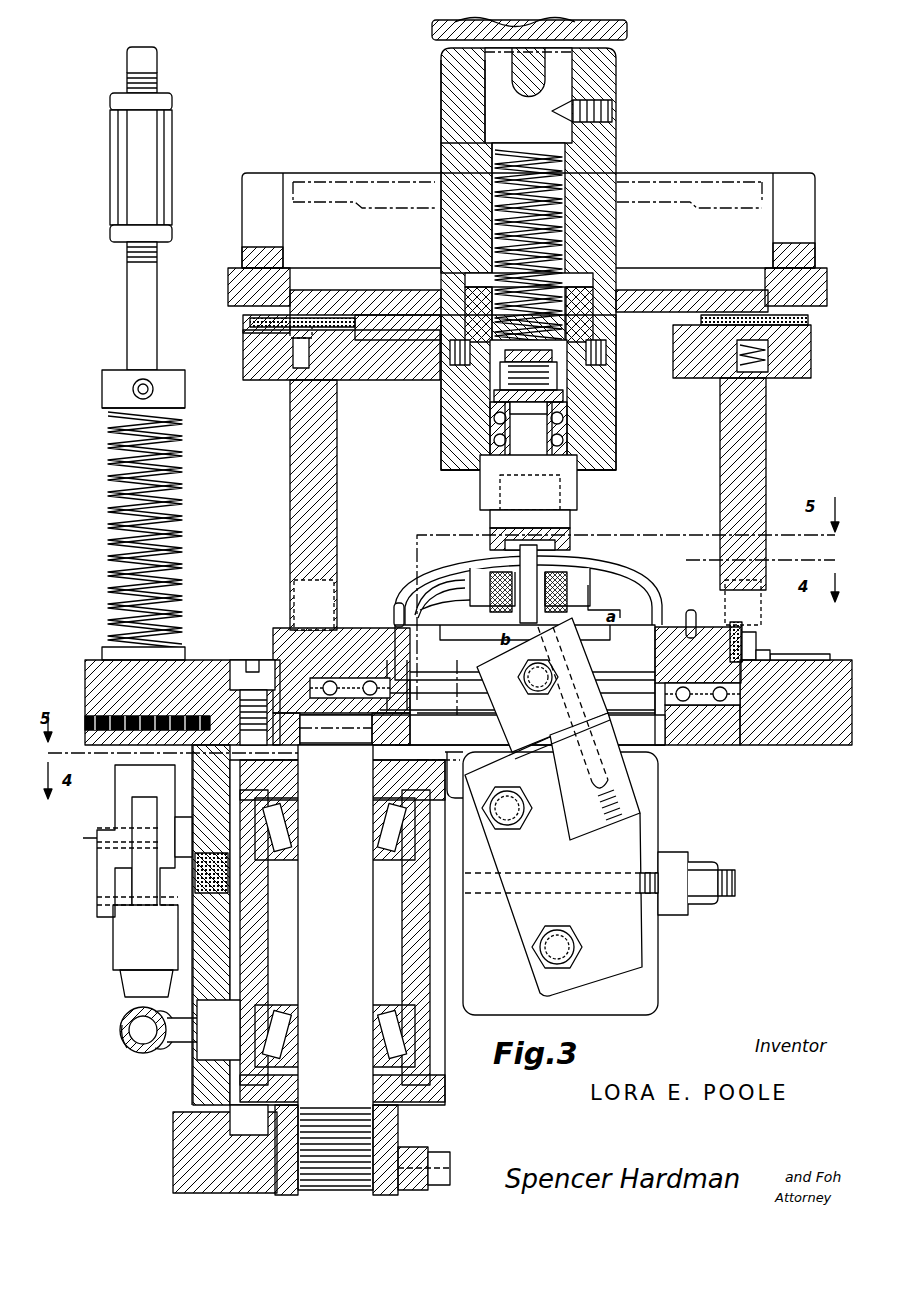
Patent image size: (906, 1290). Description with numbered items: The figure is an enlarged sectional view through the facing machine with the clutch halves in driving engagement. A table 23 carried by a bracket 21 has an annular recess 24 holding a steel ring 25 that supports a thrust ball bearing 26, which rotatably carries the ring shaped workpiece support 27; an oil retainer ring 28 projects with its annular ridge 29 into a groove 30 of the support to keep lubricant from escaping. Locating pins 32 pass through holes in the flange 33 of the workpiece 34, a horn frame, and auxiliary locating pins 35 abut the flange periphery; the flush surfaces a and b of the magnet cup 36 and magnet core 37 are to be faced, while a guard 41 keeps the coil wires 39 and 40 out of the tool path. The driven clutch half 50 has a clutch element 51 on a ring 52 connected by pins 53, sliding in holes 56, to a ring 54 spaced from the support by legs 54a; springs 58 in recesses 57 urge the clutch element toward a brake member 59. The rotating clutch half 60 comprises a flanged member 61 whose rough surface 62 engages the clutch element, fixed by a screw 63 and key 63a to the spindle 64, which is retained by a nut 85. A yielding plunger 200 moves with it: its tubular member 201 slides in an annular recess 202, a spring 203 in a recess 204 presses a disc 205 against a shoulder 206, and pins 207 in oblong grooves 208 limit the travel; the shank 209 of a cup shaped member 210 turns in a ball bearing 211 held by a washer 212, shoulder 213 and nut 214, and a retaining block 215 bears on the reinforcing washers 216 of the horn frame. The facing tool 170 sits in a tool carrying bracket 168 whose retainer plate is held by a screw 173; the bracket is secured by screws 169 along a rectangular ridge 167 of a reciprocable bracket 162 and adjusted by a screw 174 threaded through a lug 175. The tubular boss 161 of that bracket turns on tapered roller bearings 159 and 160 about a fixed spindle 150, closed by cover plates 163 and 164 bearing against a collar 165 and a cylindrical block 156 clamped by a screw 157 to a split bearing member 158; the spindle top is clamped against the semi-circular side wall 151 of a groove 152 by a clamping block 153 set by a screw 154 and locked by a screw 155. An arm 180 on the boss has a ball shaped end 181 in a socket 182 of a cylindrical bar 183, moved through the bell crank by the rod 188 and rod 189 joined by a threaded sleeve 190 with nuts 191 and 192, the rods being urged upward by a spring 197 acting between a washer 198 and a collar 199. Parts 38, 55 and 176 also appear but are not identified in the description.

The nut 85 is at (432, 30).
The key 63a is at (441, 72).
The spindle 64 is at (565, 72).
The screw 63 is at (612, 111).
The recess 204 is at (490, 168).
The spring 203 is at (590, 182).
The flanged member 61 is at (455, 230).
The rough surface 62 is at (330, 318).
The annular recess 202 is at (440, 286).
The reciprocable clutch half 60 is at (625, 292).
The brake member 59 is at (230, 288).
The clutch element 51 is at (255, 320).
The ring 52 is at (258, 333).
The holes 56 is at (290, 346).
The ring 54 is at (262, 372).
The pins 53 is at (300, 368).
The driven clutch half 50 is at (808, 325).
The recesses 57 is at (812, 358).
The springs 58 is at (758, 372).
The pins 207 is at (450, 352).
The oblong grooves 208 is at (470, 370).
The shoulder 206 is at (495, 408).
The disc 205 is at (490, 408).
The yielding plunger 200 is at (482, 410).
The tubular member 201 is at (468, 436).
The nut 214 is at (555, 372).
The washer 212 is at (560, 385).
The shoulder 213 is at (562, 405).
The ball bearing 211 is at (572, 428).
The shank 209 is at (522, 462).
The cup shaped member 210 is at (580, 484).
The workpiece retaining block 215 is at (525, 522).
The reinforcing washers 216 is at (548, 548).
The legs 54a is at (298, 462).
The dowel 55 is at (300, 590).
The wire 39 is at (548, 592).
The locating pins 32 is at (398, 610).
The magnet cup 36 is at (580, 592).
The workpiece 34 is at (652, 588).
The flange 33 is at (689, 615).
The workpiece support 27 is at (730, 640).
The guard 41 is at (606, 618).
The wire 40 is at (455, 605).
The core 38 is at (522, 614).
The magnet core 37 is at (530, 640).
The facing tool 170 is at (560, 630).
The auxiliary locating pins 35 is at (656, 652).
The groove 30 is at (752, 636).
The annular ridge 29 is at (766, 658).
The oil retainer ring 28 is at (800, 655).
The screw 155 is at (250, 664).
The screw 154 is at (108, 715).
The washer 198 is at (110, 655).
The spring 197 is at (112, 465).
The collar 199 is at (110, 388).
The rod 188 is at (125, 290).
The rod 189 is at (170, 70).
The interiorly threaded sleeve 190 is at (160, 130).
The nut 191 is at (170, 232).
The nut 192 is at (170, 98).
The semi-circular side wall 151 is at (390, 734).
The groove 152 is at (195, 766).
The clamping block 153 is at (290, 745).
The collar 165 is at (360, 762).
The cover plate 163 is at (470, 718).
The screw 173 is at (535, 688).
The thrust ball bearing 26 is at (690, 705).
The steel ring 25 is at (712, 715).
The annular recess 24 is at (735, 705).
The table 23 is at (795, 745).
The bracket 21 is at (205, 935).
The tapered roller bearing 159 is at (292, 852).
The spindle 150 is at (395, 905).
The tubular boss 161 is at (446, 950).
The rectangular ridge 167 is at (486, 903).
The screws 169 is at (560, 935).
The threaded stud 176 is at (705, 862).
The adjusting screw 174 is at (722, 872).
The lug 175 is at (690, 908).
The tool carrying bracket 168 is at (640, 935).
The reciprocable bracket 162 is at (660, 972).
The tapered roller bearing 160 is at (292, 1012).
The ball shaped end 181 is at (143, 1016).
The socket 182 is at (129, 1030).
The cylindrical bar 183 is at (135, 1050).
The arm 180 is at (197, 1060).
The split bearing member 158 is at (178, 1163).
The cover plate 164 is at (430, 1095).
The cylindrical block 156 is at (400, 1130).
The screw 157 is at (450, 1160).